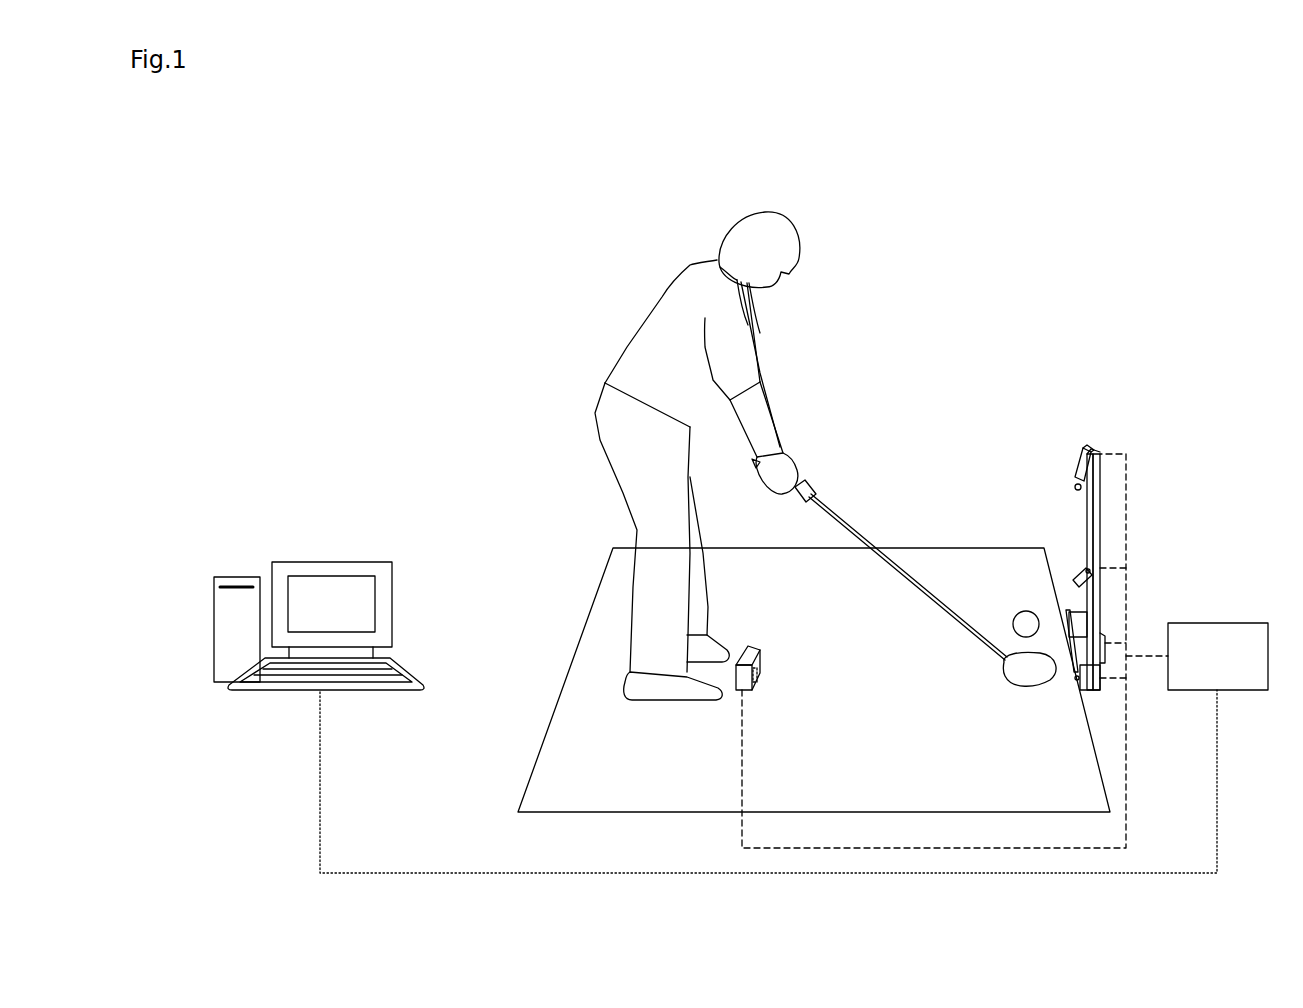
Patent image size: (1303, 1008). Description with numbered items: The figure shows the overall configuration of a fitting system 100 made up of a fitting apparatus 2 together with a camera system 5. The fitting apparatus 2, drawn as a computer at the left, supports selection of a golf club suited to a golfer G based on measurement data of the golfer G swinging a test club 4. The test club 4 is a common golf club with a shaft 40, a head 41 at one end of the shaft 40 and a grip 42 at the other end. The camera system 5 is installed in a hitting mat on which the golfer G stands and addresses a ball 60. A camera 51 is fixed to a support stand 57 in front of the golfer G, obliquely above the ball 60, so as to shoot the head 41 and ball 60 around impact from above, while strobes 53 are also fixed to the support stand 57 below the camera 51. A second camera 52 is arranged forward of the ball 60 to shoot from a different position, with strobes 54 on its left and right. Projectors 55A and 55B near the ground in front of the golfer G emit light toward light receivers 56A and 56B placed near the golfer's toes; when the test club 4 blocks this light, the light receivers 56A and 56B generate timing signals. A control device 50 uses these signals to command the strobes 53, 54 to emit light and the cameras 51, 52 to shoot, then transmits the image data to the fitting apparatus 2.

The fitting system 100 is at (1092, 220).
The fitting apparatus 2 is at (325, 543).
The golfer G is at (676, 316).
The test club 4 is at (874, 506).
The shaft 40 is at (870, 550).
The head 41 is at (1022, 685).
The grip 42 is at (809, 486).
The ball 60 is at (1022, 612).
The camera system 5 is at (1105, 430).
The camera 51 is at (1079, 468).
The camera 52 is at (1070, 638).
The strobe 53 is at (1092, 578).
The strobe 54 is at (1067, 632).
The projector 55A is at (1080, 684).
The projector 55B is at (1076, 669).
The light receiver 56A is at (752, 693).
The light receiver 56B is at (758, 669).
The support stand 57 is at (1098, 530).
The control device 50 is at (1232, 632).